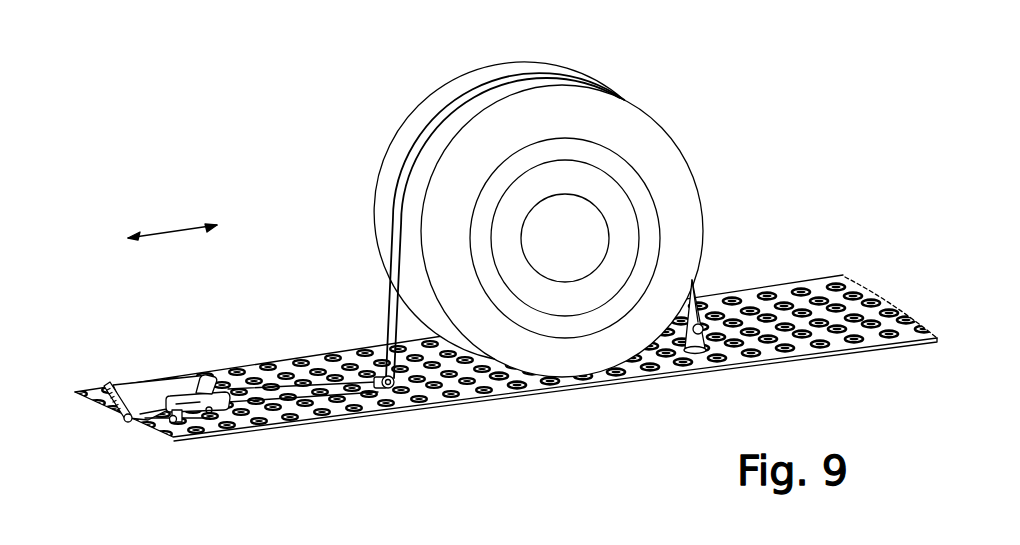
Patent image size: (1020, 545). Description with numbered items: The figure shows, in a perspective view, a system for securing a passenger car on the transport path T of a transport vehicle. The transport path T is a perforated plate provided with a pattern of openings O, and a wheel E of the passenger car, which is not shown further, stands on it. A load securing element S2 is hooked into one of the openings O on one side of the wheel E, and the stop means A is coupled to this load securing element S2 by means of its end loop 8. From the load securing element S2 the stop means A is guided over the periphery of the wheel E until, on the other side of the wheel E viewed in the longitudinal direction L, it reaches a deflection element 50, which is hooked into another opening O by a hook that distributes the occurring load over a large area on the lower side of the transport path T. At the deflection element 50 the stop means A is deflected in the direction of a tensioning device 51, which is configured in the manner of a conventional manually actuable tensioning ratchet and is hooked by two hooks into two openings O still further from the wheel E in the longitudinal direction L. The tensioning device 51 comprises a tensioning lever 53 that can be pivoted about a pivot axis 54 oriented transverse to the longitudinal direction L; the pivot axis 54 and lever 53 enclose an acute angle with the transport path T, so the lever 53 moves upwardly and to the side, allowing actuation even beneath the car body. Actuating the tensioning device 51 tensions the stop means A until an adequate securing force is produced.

The wheel E is at (627, 120).
The stop means A is at (385, 320).
The transport path T is at (755, 303).
The openings O is at (270, 362).
The end loop 8 is at (698, 300).
The load securing element S2 is at (716, 342).
The deflection element 50 is at (398, 390).
The tensioning device 51 is at (190, 380).
The tensioning lever 53 is at (110, 383).
The pivot axis 54 is at (210, 378).
The longitudinal direction L is at (172, 223).